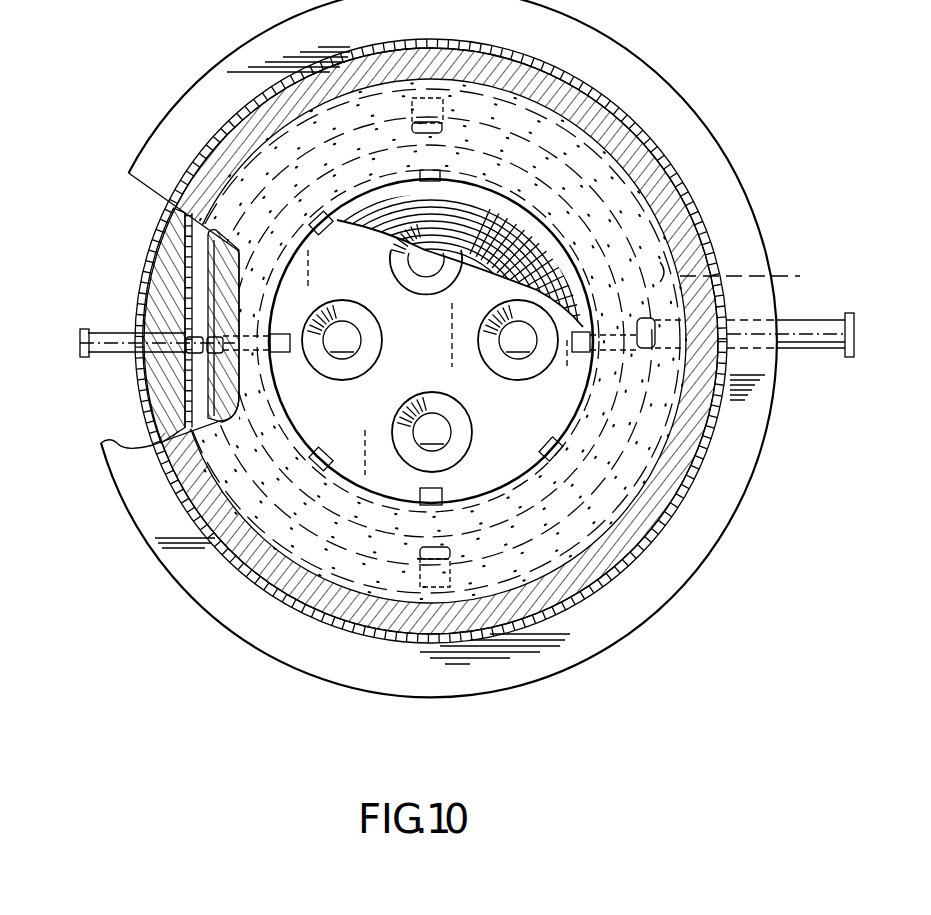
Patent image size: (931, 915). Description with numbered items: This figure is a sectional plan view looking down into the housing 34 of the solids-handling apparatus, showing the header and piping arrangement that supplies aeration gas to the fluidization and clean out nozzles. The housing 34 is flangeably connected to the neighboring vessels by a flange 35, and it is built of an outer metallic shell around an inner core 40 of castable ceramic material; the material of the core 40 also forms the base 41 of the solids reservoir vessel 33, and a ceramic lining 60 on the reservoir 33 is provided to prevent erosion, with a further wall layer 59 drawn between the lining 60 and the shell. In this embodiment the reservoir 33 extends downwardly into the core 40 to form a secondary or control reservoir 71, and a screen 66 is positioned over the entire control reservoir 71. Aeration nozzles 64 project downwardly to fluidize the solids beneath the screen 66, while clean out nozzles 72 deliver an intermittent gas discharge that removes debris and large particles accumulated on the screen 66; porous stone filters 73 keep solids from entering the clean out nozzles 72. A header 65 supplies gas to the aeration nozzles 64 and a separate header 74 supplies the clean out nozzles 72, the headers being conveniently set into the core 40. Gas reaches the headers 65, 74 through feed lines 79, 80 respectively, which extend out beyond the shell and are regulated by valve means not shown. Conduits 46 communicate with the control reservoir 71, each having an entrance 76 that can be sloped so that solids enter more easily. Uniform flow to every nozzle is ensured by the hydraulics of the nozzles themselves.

The solids reservoir vessel 33 is at (603, 480).
The housing 34 is at (150, 230).
The flange 35 is at (750, 243).
The inner core 40 is at (145, 297).
The base of the reservoir 41 is at (553, 160).
The conduits 46 is at (400, 260).
The liner shell 59 is at (653, 163).
The ceramic lining 60 is at (677, 210).
The aeration nozzles 64 is at (328, 450).
The header 65 is at (600, 385).
The screen 66 is at (478, 188).
The control reservoir 71 is at (438, 371).
The clean out nozzles 72 is at (188, 352).
The porous stone filters 73 is at (412, 130).
The header 74 is at (741, 278).
The entrance 76 is at (443, 277).
The feed line 79 is at (80, 345).
The feed line 80 is at (810, 337).